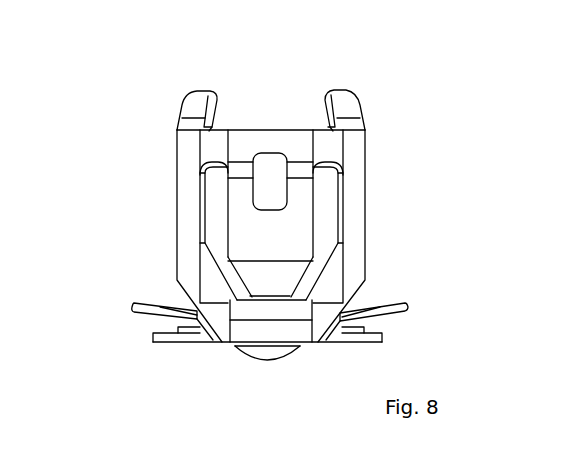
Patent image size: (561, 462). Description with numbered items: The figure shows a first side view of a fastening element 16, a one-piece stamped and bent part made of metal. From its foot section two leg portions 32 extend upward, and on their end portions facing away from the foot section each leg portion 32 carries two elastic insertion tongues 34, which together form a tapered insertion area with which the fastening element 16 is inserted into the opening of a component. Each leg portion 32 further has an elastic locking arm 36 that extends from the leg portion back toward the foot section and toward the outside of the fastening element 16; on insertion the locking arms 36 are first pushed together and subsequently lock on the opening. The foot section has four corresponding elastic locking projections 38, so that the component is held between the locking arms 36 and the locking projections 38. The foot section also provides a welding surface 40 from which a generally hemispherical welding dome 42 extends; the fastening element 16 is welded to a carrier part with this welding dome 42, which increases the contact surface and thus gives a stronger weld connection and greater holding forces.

The fastening element 16 is at (130, 124).
The leg portion 32 is at (177, 195).
The elastic insertion tongue 34 is at (199, 98).
The elastic locking arm 36 is at (268, 248).
The elastic locking projection 38 is at (134, 305).
The welding surface 40 is at (318, 343).
The welding dome 42 is at (270, 356).